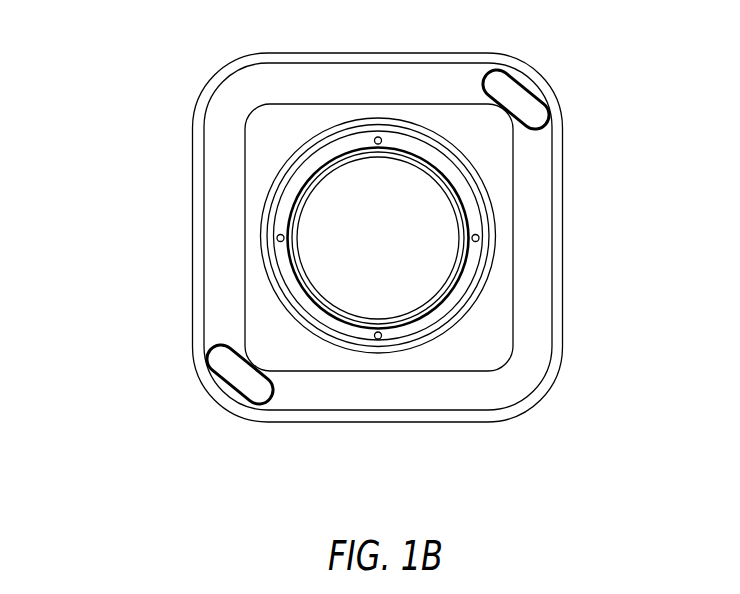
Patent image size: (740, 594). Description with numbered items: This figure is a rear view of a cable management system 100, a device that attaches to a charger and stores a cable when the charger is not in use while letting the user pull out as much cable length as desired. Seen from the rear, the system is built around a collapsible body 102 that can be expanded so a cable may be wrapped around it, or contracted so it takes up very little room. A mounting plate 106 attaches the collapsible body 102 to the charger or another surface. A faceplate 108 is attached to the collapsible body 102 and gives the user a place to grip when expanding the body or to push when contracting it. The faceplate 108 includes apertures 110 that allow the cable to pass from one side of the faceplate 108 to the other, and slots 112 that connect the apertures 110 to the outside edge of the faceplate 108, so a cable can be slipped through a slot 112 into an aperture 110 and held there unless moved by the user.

The cable management system 100 is at (143, 109).
The collapsible body 102 is at (478, 223).
The mounting plate 106 is at (457, 176).
The faceplate 108 is at (538, 319).
The aperture 110 is at (528, 106).
The slot 112 is at (222, 394).